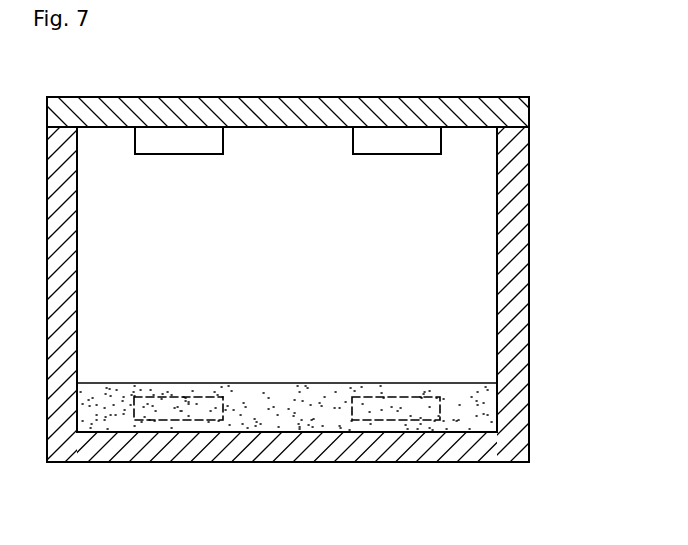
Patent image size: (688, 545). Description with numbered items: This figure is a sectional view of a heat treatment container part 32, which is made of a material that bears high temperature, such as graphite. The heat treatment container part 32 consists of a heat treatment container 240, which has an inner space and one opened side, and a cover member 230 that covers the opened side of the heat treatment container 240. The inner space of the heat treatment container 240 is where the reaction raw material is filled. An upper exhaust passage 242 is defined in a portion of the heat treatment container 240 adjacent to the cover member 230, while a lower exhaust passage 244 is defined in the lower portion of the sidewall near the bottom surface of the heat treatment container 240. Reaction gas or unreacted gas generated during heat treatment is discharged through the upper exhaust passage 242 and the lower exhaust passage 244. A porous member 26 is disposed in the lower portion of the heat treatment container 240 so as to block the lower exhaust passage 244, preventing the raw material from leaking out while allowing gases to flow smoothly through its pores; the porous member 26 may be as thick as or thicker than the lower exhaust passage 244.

The heat treatment container part 32 is at (326, 298).
The cover member 230 is at (522, 112).
The heat treatment container 240 is at (520, 162).
The upper exhaust passage 242 is at (405, 136).
The porous member 26 is at (104, 413).
The lower exhaust passage 244 is at (395, 420).